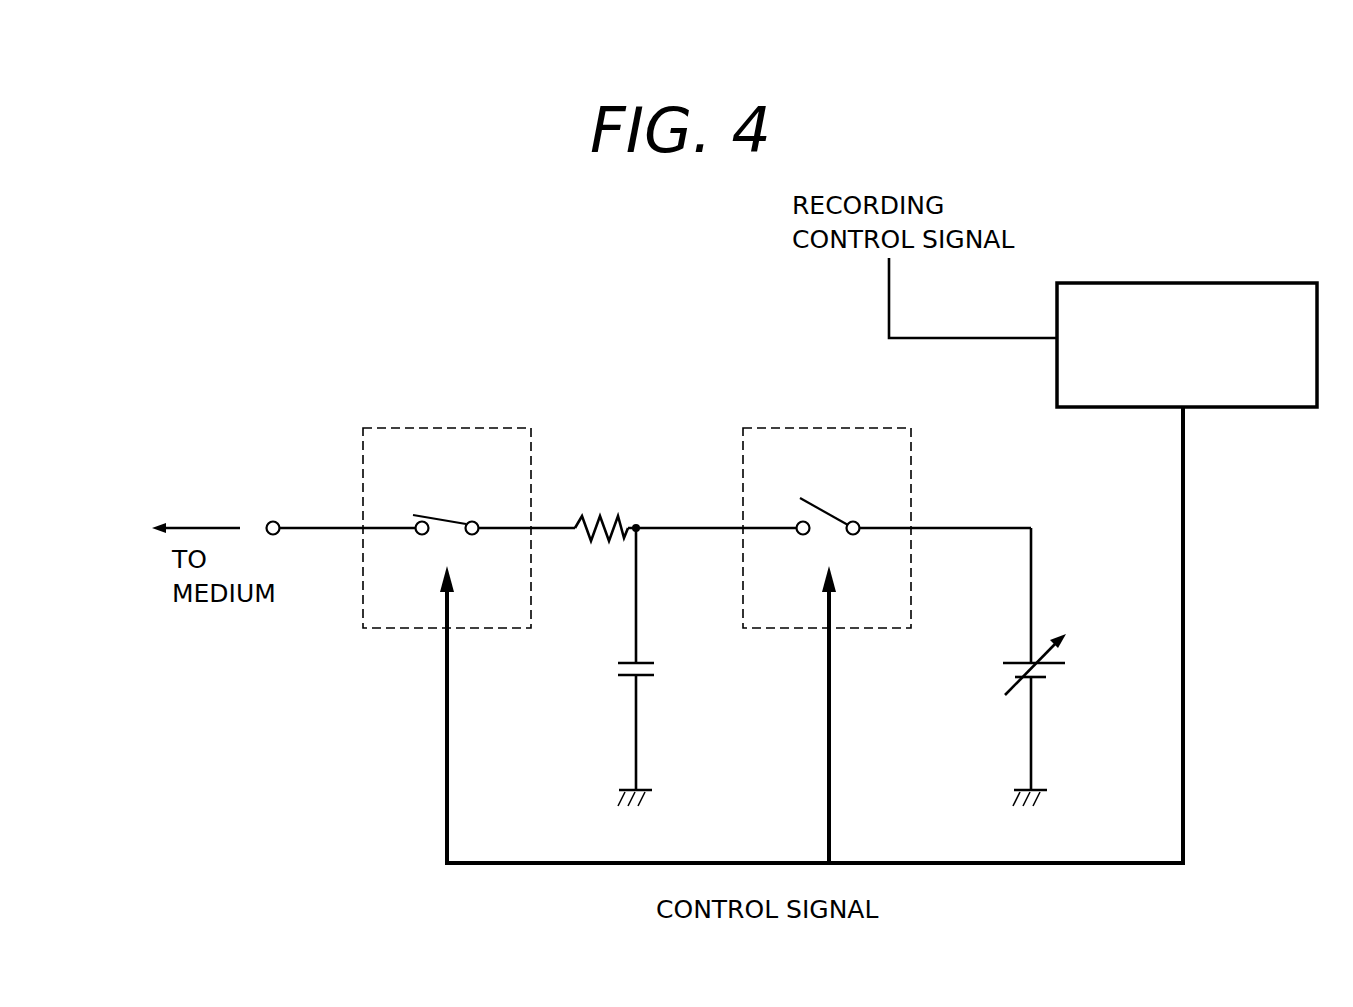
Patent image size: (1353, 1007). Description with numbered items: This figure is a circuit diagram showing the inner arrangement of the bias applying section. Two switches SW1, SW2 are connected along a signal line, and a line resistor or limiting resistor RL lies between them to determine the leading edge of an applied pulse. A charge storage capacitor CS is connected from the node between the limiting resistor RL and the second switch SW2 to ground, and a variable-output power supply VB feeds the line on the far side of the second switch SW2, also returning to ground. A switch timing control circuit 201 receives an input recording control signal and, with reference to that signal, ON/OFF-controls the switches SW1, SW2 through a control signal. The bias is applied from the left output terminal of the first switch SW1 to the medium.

The switch timing control circuit 201 is at (1277, 283).
The switch SW1 is at (447, 511).
The switch SW2 is at (827, 511).
The limiting resistor RL is at (601, 550).
The charge storage capacitor CS is at (616, 665).
The variable-output power supply VB is at (1058, 664).